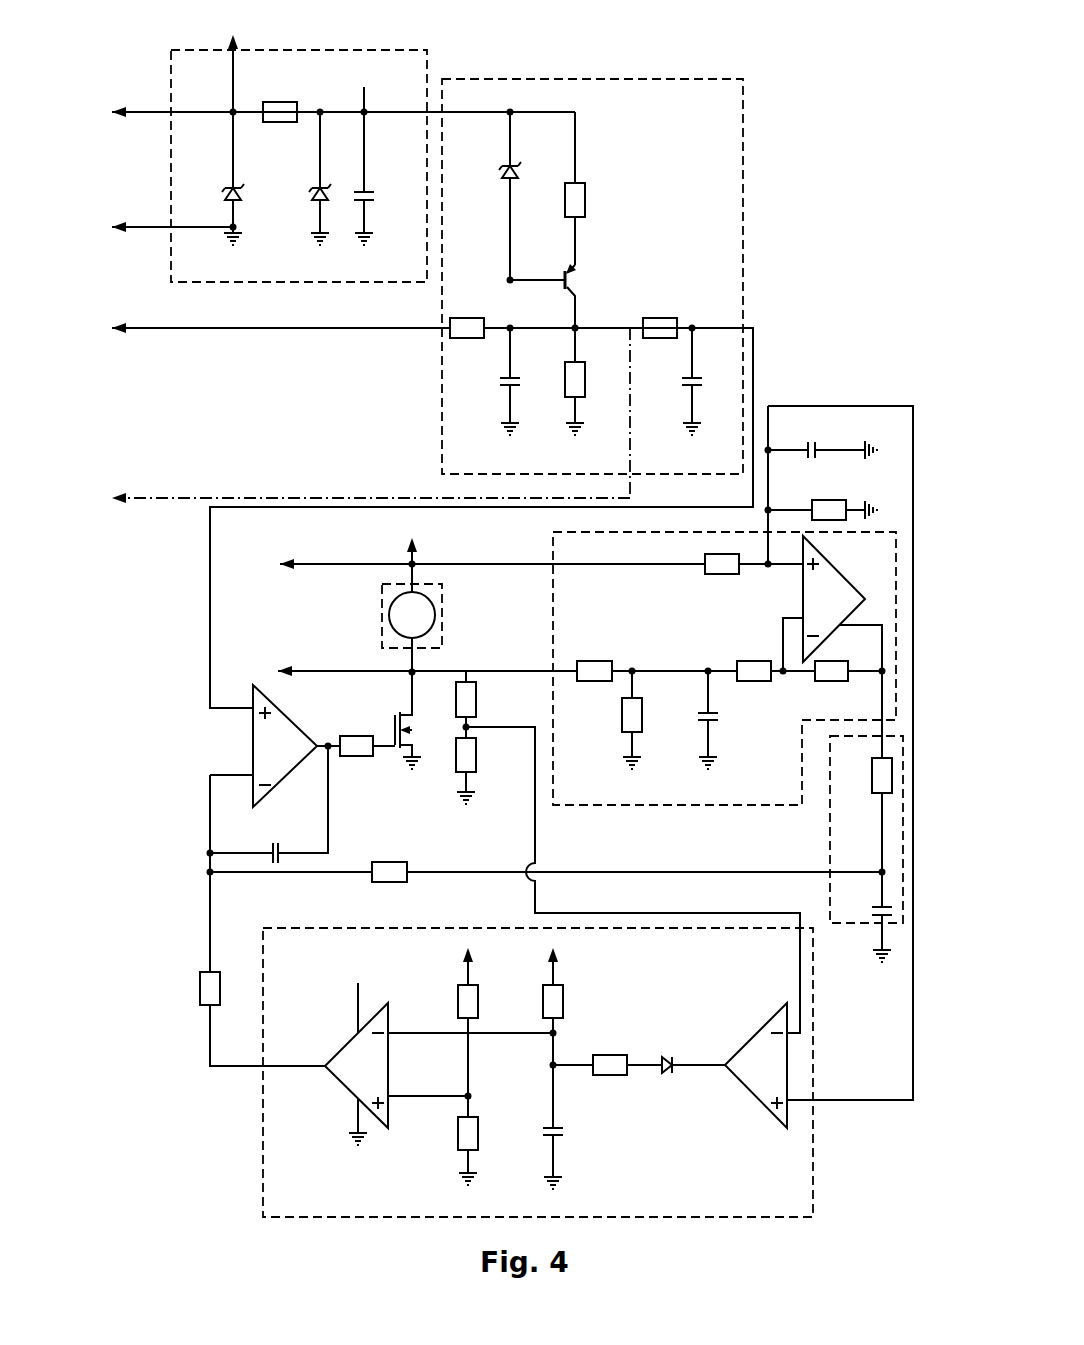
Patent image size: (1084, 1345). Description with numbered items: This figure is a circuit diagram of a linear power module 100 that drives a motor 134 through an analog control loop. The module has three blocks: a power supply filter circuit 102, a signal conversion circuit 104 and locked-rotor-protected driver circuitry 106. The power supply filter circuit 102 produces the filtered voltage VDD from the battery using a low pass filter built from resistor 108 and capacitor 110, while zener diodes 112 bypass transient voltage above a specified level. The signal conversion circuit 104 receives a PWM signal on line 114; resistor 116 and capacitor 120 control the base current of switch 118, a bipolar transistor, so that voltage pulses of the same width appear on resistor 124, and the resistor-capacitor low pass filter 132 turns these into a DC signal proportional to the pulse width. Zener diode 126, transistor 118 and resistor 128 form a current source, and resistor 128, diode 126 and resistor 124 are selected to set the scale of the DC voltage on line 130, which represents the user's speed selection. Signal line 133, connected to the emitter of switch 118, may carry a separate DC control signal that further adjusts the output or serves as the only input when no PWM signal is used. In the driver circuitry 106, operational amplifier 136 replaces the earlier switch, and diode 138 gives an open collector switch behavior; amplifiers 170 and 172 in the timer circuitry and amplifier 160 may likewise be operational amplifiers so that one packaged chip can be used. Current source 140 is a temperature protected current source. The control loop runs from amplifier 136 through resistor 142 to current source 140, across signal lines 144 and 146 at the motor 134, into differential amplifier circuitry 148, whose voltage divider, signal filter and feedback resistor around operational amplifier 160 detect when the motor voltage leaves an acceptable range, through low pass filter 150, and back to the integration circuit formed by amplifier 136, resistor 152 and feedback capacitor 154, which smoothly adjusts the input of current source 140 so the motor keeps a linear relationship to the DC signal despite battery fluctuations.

The linear power module 100 is at (512, 617).
The power supply filter circuit 102 is at (427, 65).
The signal conversion circuit 104 is at (743, 127).
The locked-rotor-protected driver circuitry 106 is at (217, 1157).
The resistor 108 is at (286, 101).
The capacitor 110 is at (372, 190).
The zener diodes 112 is at (243, 204).
The line 114 is at (268, 331).
The resistor 116 is at (452, 339).
The switch 118 is at (584, 270).
The capacitor 120 is at (503, 378).
The resistor 124 is at (568, 364).
The zener diode 126 is at (518, 160).
The resistor 128 is at (586, 185).
The line 130 is at (622, 327).
The low pass filter 132 is at (698, 372).
The signal line 133 is at (306, 497).
The motor 134 is at (442, 616).
The operational amplifier 136 is at (258, 684).
The diode 138 is at (665, 1076).
The current source 140 is at (397, 752).
The resistor 142 is at (357, 736).
The signal line 144 is at (517, 563).
The signal line 146 is at (455, 670).
The differential amplifier circuitry 148 is at (641, 806).
The low pass filter 150 is at (830, 808).
The resistor 152 is at (370, 882).
The feedback capacitor 154 is at (270, 848).
The operational amplifier 160 is at (848, 586).
The amplifier 170 is at (753, 1100).
The amplifier 172 is at (350, 1089).